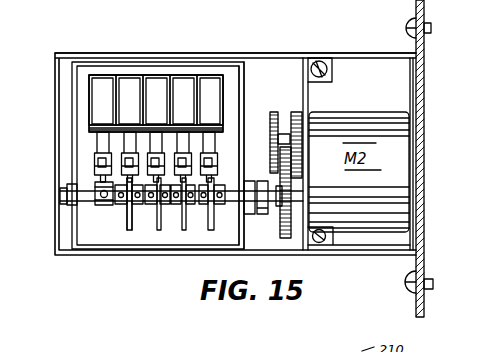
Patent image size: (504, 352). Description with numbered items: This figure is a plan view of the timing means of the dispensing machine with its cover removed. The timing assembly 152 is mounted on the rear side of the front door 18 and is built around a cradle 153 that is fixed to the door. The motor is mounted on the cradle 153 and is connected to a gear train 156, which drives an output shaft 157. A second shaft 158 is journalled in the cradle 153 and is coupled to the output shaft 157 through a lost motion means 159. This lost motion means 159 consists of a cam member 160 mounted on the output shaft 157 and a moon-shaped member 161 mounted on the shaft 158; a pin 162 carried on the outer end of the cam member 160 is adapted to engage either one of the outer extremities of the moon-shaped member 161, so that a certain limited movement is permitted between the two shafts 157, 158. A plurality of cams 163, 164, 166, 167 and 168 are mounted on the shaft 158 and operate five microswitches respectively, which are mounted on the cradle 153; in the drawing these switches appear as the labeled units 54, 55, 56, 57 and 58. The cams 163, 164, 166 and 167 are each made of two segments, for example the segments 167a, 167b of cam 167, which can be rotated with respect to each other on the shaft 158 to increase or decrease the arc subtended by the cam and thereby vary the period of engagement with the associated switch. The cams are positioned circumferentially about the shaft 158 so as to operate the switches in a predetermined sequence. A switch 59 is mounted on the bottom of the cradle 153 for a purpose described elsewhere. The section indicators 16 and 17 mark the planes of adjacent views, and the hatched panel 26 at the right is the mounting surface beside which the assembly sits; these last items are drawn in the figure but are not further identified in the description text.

The section line 17- 17 is at (105, 265).
The section line 16- 16 is at (266, 153).
The front door 18 is at (8, 7).
The mounting panel 26 is at (422, 42).
The switch cartridge 54 is at (217, 110).
The switch cartridge 55 is at (191, 110).
The switch cartridge 56 is at (164, 110).
The switch cartridge 57 is at (137, 110).
The switch cartridge 58 is at (110, 110).
The switch 59 is at (148, 128).
The timing assembly 152 is at (281, 22).
The cradle 153 is at (406, 23).
The gear train 156 is at (281, 97).
The output shaft 157 is at (314, 250).
The shaft 158 is at (84, 190).
The lost motion means 159 is at (239, 206).
The cam member 160 is at (201, 198).
The moon-shaped member 161 is at (263, 141).
The pin 162 is at (287, 240).
The cam 163 is at (211, 205).
The cam 164 is at (187, 226).
The cam 166 is at (153, 232).
The cam 167 is at (128, 211).
The cam segment 167a is at (133, 232).
The cam segment 167b is at (128, 232).
The cam 168 is at (113, 206).